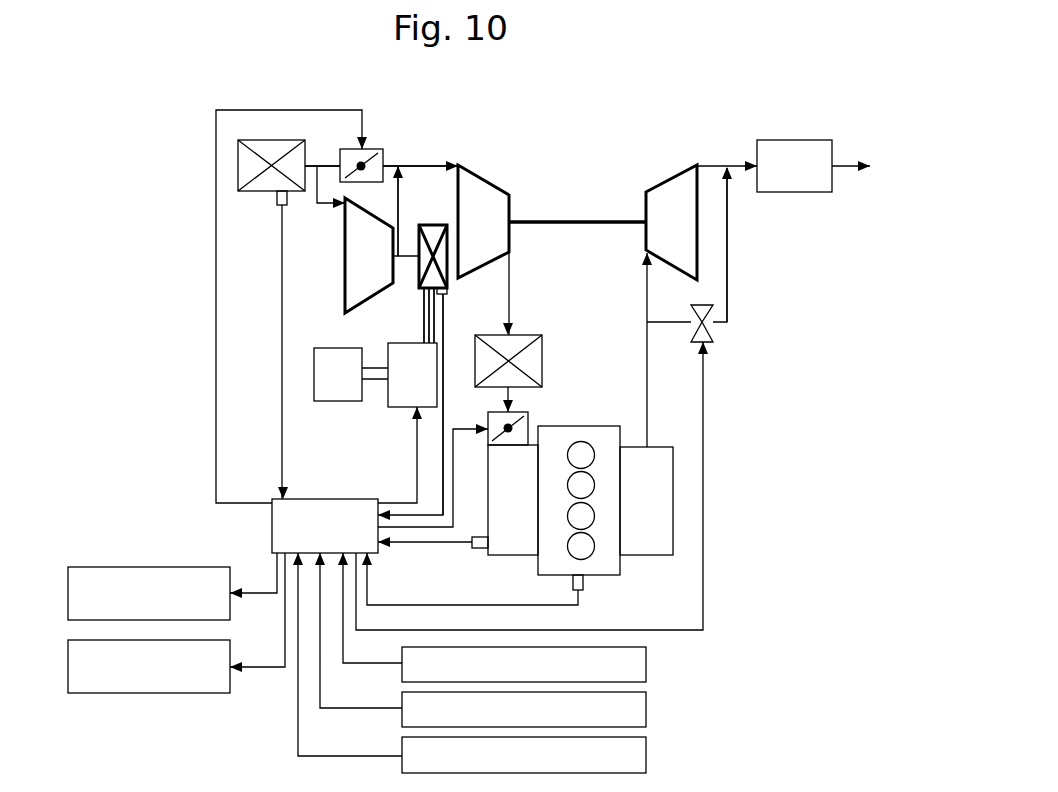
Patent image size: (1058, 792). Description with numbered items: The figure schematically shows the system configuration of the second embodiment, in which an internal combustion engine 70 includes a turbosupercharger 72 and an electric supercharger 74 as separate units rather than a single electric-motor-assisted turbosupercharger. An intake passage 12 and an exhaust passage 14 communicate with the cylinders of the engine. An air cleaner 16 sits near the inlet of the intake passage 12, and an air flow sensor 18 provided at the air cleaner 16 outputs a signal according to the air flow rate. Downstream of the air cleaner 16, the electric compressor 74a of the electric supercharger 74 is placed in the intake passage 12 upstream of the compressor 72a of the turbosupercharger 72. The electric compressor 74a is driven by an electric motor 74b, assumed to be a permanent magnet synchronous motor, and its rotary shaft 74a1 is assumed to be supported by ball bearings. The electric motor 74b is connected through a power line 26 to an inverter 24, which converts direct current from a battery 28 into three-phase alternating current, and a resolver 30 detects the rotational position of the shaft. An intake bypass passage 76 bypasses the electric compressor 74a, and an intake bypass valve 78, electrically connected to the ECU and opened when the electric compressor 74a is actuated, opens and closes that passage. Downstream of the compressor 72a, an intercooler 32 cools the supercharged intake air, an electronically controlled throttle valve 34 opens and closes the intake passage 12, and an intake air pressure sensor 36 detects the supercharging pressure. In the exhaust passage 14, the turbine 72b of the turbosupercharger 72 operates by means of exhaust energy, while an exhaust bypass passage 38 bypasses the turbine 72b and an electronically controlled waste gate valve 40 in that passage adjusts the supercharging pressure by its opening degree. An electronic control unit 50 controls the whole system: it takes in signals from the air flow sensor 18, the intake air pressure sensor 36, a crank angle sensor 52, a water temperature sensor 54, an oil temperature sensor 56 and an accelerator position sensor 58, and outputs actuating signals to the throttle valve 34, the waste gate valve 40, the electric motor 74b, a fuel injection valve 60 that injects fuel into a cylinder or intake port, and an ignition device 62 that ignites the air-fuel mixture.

The intake passage 12 is at (430, 164).
The exhaust passage 14 is at (648, 415).
The air cleaner 16 is at (253, 193).
The air flow sensor 18 is at (273, 205).
The inverter 24 is at (388, 401).
The power line 26 is at (424, 327).
The battery 28 is at (314, 380).
The resolver 30 is at (444, 299).
The intercooler 32 is at (532, 335).
The throttle valve 34 is at (522, 412).
The intake air pressure sensor 36 is at (478, 537).
The exhaust bypass passage 38 is at (728, 252).
The waste gate valve 40 is at (714, 330).
The electronic control unit 50 is at (338, 499).
The crank angle sensor 52 is at (573, 583).
The water temperature sensor 54 is at (647, 663).
The oil temperature sensor 56 is at (647, 708).
The accelerator position sensor 58 is at (647, 754).
The fuel injection valve 60 is at (80, 567).
The ignition device 62 is at (80, 640).
The internal combustion engine 70 is at (746, 112).
The turbosupercharger 72 is at (578, 200).
The compressor 72a is at (482, 178).
The turbine 72b is at (672, 182).
The electric supercharger 74 is at (334, 289).
The electric compressor 74a is at (343, 232).
The rotary shaft 74a1 is at (410, 176).
The electric motor 74b is at (438, 224).
The intake bypass passage 76 is at (332, 160).
The intake bypass valve 78 is at (381, 148).